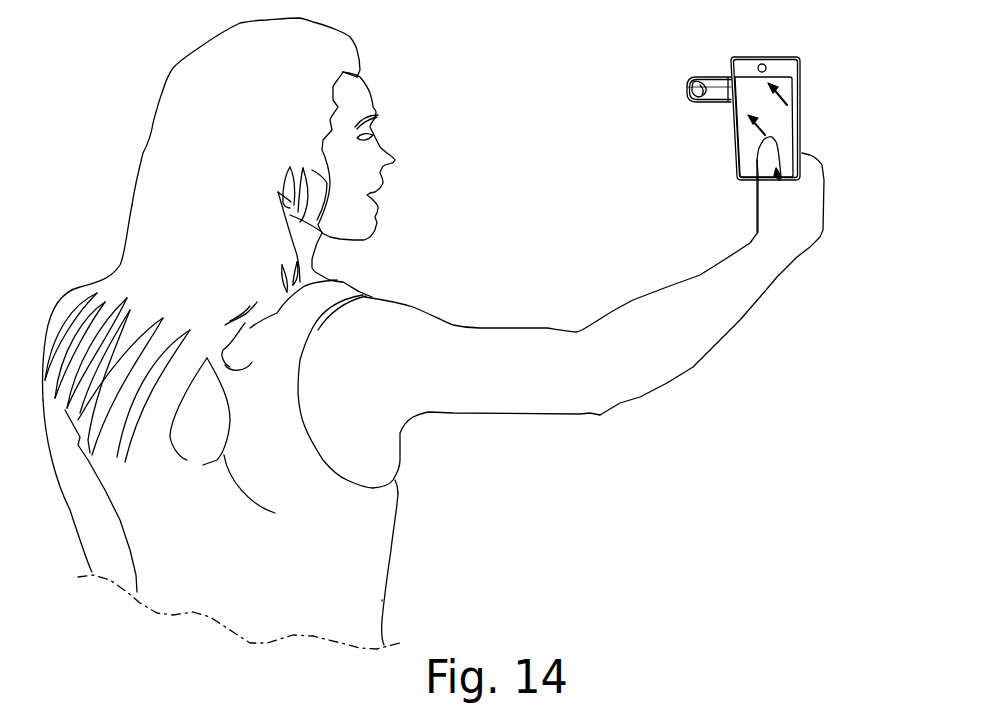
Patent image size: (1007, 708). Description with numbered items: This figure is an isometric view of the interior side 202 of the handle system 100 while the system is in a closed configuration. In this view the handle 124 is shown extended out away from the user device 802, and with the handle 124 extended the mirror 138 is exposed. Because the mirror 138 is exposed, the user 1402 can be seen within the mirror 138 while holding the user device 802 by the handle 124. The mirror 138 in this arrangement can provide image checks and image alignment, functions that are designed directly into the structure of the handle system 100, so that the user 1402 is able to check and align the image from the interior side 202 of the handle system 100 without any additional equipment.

The handle system 100 is at (122, 53).
The handle 124 is at (701, 100).
The mirror 138 is at (700, 91).
The interior side 202 is at (683, 93).
The user device 802 is at (801, 89).
The user 1402 is at (372, 560).